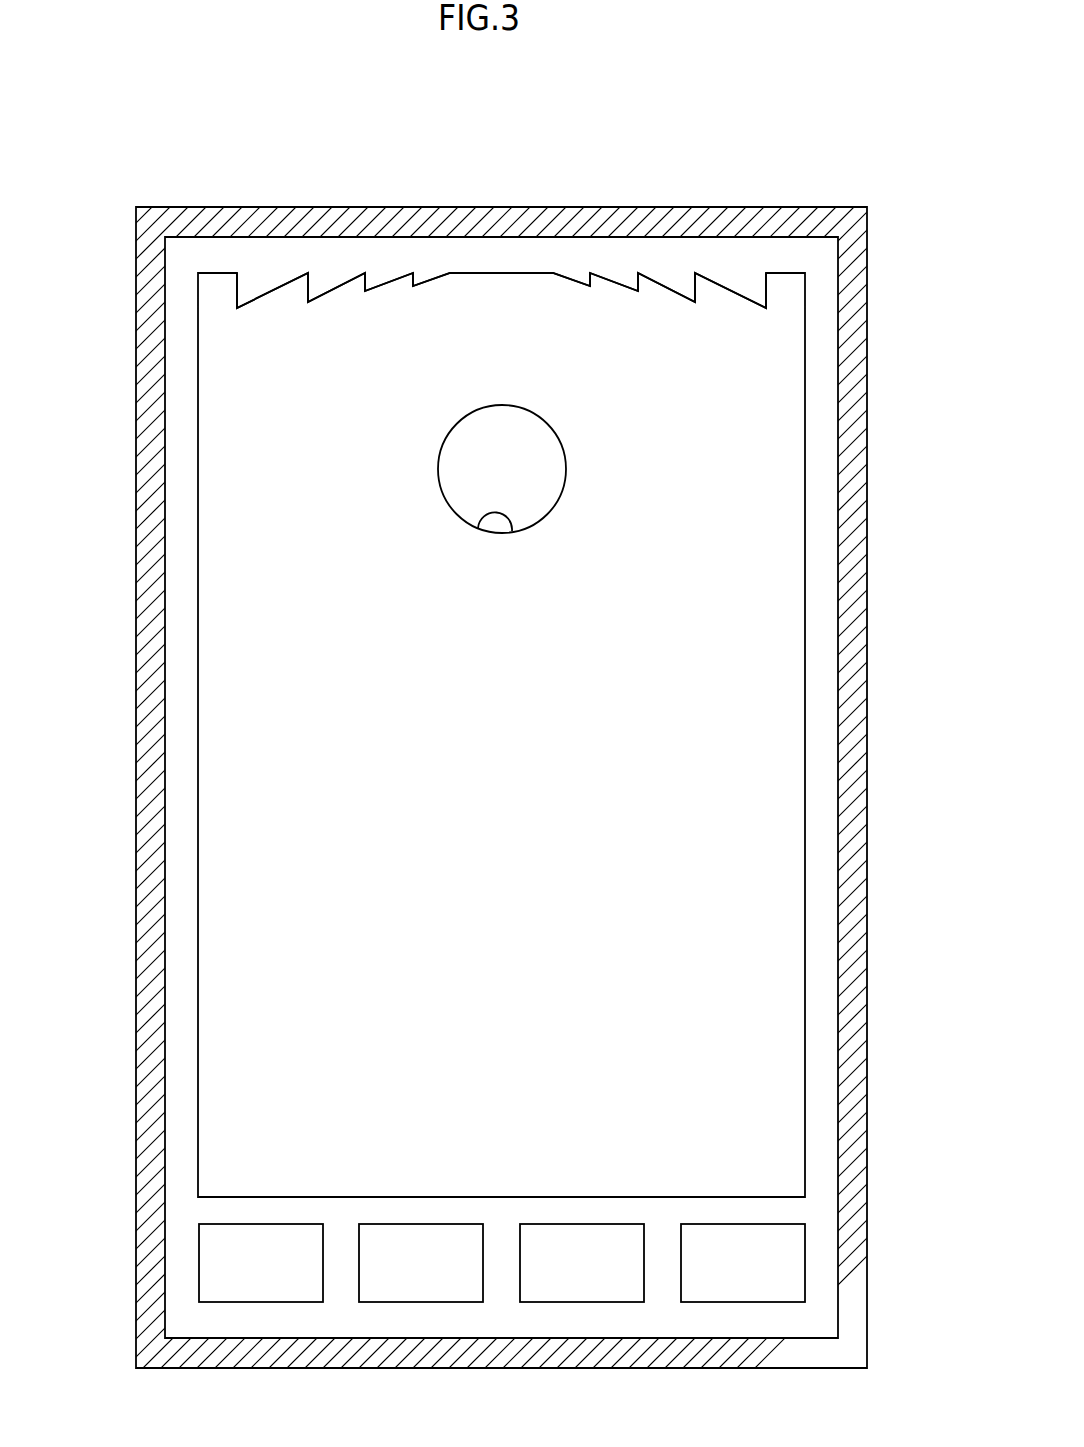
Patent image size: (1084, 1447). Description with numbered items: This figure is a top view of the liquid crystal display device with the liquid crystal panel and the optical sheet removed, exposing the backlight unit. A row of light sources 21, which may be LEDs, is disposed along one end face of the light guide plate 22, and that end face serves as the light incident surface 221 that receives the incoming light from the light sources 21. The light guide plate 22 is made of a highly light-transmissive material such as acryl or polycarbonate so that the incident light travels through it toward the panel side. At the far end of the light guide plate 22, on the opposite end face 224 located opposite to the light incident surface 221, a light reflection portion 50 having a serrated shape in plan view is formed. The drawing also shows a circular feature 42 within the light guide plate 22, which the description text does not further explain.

The light sources 21 is at (227, 1264).
The light guide plate 22 is at (752, 779).
The hole 42 is at (512, 531).
The light reflection portion 50 is at (288, 268).
The light incident surface 221 is at (756, 1200).
The opposite end face 224 is at (502, 273).